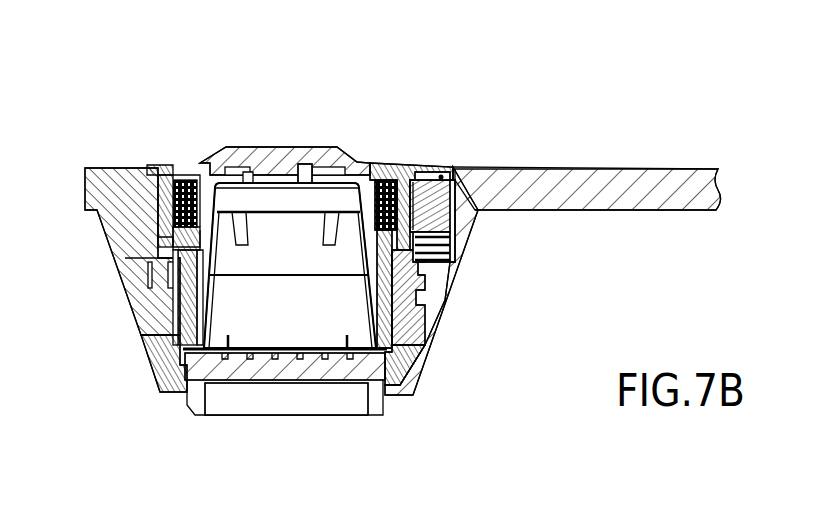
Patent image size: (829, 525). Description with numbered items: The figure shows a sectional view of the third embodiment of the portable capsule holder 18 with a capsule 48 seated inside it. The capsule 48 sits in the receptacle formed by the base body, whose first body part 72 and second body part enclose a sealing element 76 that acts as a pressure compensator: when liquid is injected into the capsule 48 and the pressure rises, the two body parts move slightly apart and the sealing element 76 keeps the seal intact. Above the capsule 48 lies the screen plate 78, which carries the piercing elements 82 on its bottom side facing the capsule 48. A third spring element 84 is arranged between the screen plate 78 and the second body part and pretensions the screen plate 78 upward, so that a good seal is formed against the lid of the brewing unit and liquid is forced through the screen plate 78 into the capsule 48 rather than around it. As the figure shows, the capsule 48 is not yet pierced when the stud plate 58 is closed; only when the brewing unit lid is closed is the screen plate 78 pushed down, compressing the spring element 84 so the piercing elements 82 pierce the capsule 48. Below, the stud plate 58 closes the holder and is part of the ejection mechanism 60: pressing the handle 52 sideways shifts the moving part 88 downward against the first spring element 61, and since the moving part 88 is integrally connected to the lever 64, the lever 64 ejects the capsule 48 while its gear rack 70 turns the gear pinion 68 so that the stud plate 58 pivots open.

The portable capsule holder 18 is at (99, 96).
The capsule 48 is at (150, 340).
The handle 52 is at (575, 187).
The stud plate 58 is at (375, 405).
The ejection mechanism 60 is at (445, 176).
The first spring element 61 is at (448, 252).
The lever 64 is at (370, 323).
The gear pinion 68 is at (440, 316).
The gear rack 70 is at (432, 350).
The first body part 72 is at (122, 232).
The sealing element 76 is at (127, 273).
The screen plate 78 is at (212, 165).
The piercing elements 82 is at (252, 165).
The third spring element 84 is at (384, 168).
The moving part 88 is at (415, 180).